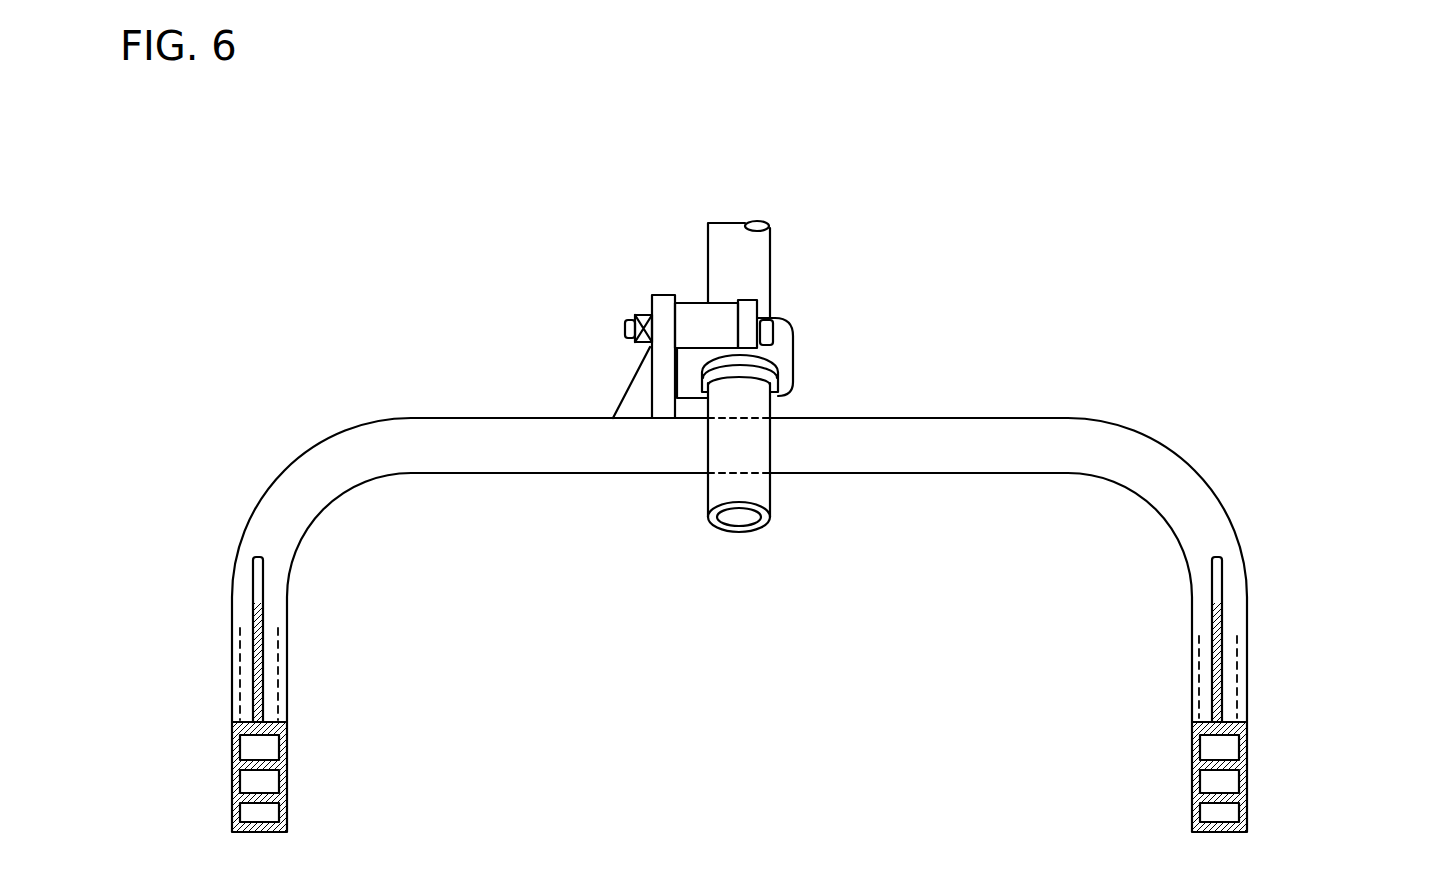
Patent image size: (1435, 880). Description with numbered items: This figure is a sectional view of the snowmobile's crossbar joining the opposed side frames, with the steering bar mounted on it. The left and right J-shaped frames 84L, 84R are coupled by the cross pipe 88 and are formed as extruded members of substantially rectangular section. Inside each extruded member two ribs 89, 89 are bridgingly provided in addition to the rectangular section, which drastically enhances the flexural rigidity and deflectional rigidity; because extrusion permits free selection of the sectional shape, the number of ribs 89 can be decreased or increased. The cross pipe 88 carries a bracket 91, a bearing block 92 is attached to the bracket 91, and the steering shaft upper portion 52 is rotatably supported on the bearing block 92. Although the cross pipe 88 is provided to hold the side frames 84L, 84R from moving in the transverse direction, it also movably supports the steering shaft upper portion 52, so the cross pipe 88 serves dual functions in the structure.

The steering shaft upper portion 52 is at (745, 267).
The left J-shaped frame 84L is at (232, 787).
The right J-shaped frame 84R is at (1248, 785).
The cross pipe 88 is at (968, 440).
The rib 89 is at (285, 763).
The bracket 91 is at (663, 312).
The bearing block 92 is at (795, 343).